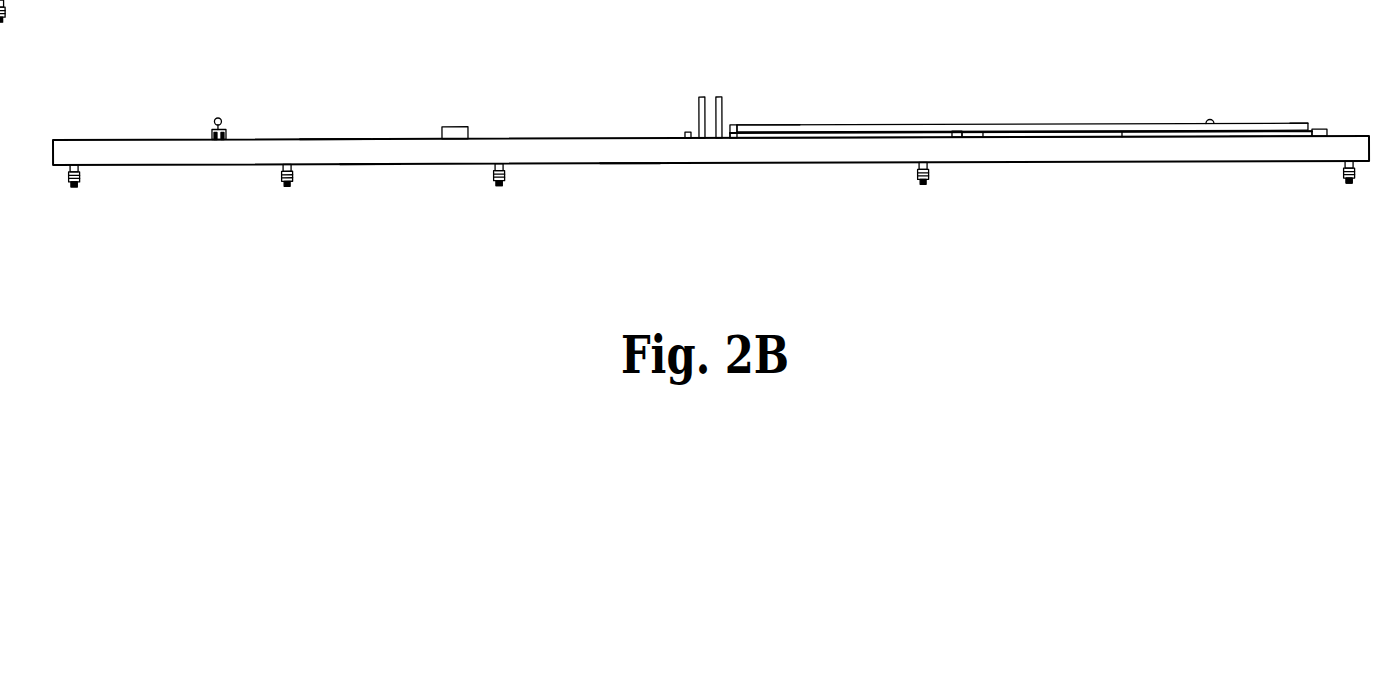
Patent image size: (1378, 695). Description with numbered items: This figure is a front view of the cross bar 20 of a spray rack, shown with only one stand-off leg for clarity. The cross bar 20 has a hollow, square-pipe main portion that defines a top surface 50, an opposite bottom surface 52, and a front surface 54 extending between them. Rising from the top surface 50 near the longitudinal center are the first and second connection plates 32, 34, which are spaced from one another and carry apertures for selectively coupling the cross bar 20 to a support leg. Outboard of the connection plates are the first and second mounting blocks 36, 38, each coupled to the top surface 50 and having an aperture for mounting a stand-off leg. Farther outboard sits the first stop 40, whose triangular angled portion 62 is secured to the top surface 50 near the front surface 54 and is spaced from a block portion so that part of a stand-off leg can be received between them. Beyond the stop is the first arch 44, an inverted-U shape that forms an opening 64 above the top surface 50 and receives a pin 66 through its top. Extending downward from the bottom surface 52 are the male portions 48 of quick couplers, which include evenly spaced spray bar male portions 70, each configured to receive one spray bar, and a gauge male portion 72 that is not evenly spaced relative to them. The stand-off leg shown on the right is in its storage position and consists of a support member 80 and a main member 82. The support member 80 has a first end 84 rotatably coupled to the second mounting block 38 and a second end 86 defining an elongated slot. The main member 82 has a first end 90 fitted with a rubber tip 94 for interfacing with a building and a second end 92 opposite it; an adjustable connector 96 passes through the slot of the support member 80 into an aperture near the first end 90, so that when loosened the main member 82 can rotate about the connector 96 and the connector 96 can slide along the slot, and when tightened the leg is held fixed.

The cross bar 20 is at (549, 139).
The first connection plate 32 is at (702, 98).
The second connection plate 34 is at (719, 98).
The first mounting block 36 is at (687, 133).
The second mounting block 38 is at (733, 141).
The first stop 40 is at (452, 128).
The first arch 44 is at (212, 134).
The male portions of quick couplers 48 is at (74, 191).
The top surface 50 is at (335, 140).
The bottom surface 52 is at (365, 167).
The front surface 54 is at (630, 152).
The angled portion 62 is at (972, 134).
The opening 64 is at (226, 134).
The pin 66 is at (218, 117).
The spray bar male portions 70 is at (80, 185).
The gauge male portion 72 is at (287, 187).
The support member 80 is at (1048, 126).
The main member 82 is at (1122, 141).
The first end 84 is at (757, 126).
The second end 86 is at (1244, 126).
The first end 90 is at (1263, 140).
The second end 92 is at (955, 133).
The rubber tip 94 is at (1320, 132).
The connector 96 is at (1295, 126).